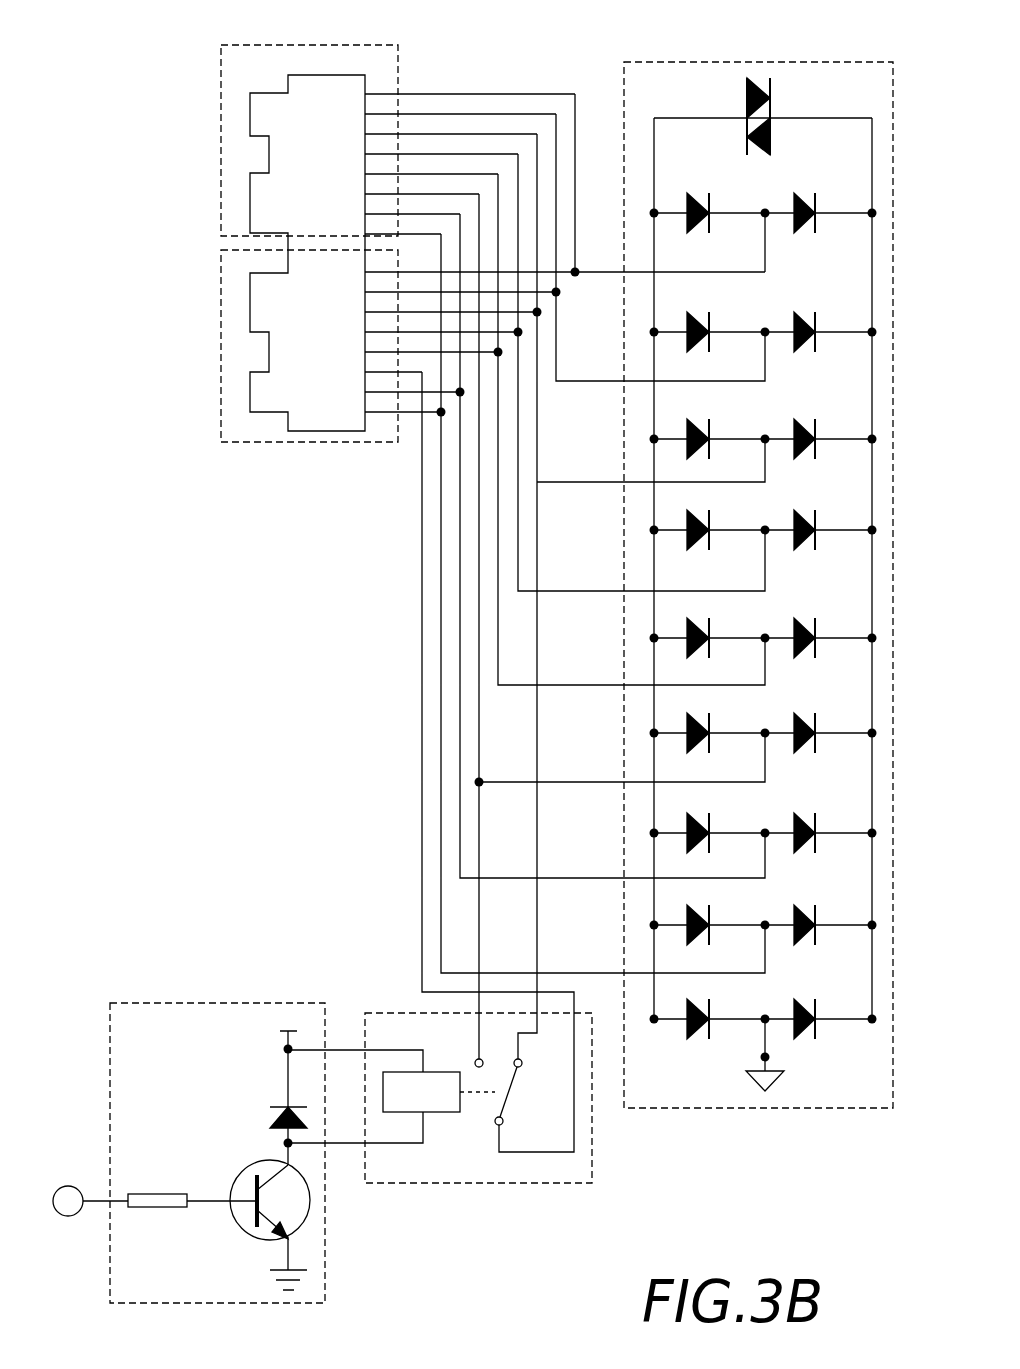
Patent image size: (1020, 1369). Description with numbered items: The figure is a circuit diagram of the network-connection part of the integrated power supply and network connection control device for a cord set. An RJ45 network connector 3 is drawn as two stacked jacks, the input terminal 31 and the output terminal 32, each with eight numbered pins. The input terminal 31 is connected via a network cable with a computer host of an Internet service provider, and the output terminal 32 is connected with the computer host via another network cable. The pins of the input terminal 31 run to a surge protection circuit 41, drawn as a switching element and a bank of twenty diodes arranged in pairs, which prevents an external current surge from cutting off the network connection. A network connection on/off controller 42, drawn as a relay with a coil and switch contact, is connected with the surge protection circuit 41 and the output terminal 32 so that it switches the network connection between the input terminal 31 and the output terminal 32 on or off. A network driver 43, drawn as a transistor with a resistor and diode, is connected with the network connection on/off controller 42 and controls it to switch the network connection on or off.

The network connector 3 is at (80, 197).
The input terminal 31 is at (220, 141).
The output terminal 32 is at (220, 338).
The surge protection circuit 41 is at (668, 58).
The network connection on/off controller 42 is at (592, 1143).
The network driver 43 is at (197, 1003).